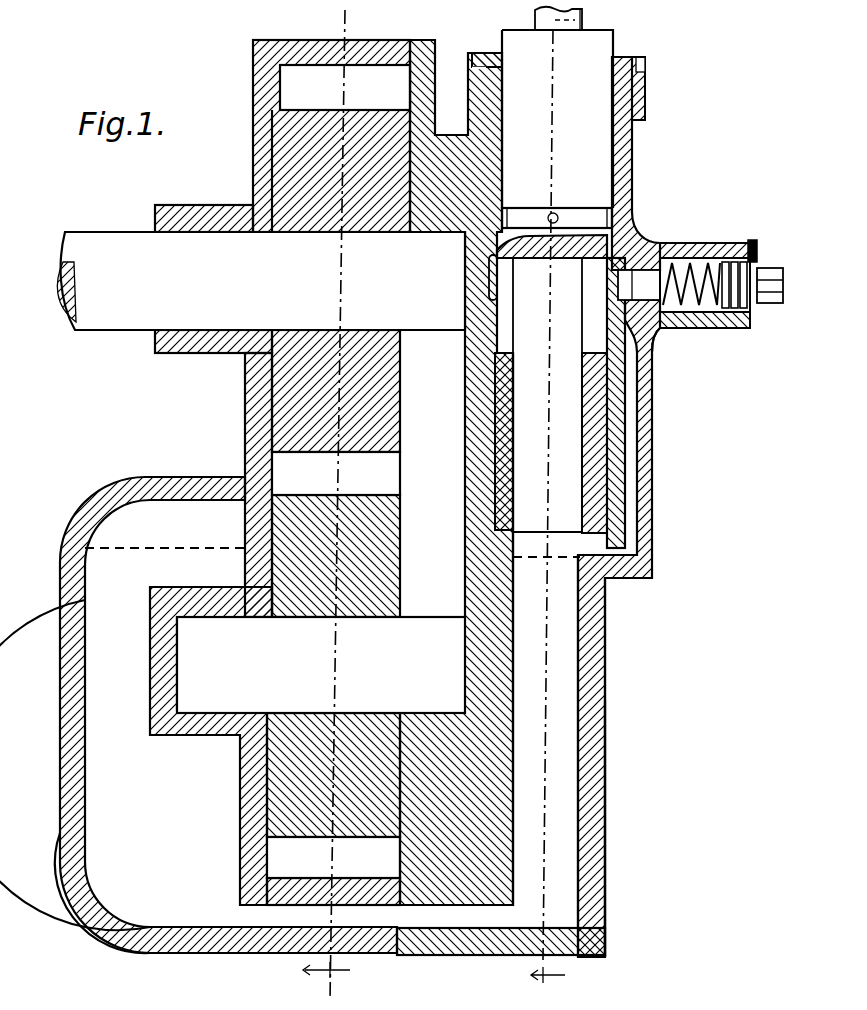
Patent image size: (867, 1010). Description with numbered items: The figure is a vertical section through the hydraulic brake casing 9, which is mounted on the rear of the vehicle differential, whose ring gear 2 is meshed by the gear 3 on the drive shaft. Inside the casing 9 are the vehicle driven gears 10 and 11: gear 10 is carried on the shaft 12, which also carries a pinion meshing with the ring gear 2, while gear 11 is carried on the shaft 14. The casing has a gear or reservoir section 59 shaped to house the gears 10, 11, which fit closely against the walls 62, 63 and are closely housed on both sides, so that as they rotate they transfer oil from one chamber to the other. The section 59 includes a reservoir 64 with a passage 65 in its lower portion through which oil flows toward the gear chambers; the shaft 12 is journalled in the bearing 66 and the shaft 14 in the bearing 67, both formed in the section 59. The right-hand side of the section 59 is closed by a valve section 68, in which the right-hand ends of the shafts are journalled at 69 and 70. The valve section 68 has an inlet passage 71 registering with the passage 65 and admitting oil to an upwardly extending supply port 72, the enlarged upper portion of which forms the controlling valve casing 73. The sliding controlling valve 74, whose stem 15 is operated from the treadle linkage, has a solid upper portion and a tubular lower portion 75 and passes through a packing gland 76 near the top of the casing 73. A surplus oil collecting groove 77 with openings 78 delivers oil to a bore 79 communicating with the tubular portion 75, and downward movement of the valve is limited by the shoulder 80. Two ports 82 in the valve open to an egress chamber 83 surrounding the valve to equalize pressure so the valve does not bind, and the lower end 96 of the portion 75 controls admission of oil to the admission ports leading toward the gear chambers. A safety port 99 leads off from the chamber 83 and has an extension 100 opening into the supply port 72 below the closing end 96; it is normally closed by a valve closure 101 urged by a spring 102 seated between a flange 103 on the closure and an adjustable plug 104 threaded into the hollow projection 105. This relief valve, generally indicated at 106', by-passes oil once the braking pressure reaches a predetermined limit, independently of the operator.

The ring gear 2 is at (327, 506).
The drive shaft gear 3 is at (583, 19).
The hydraulic brake casing 9 is at (85, 680).
The vehicle driven gear 10 is at (322, 182).
The vehicle driven gear 11 is at (120, 548).
The shaft 12 is at (130, 312).
The shaft 14 is at (212, 688).
The valve stem 15 is at (585, 17).
The gear or reservoir section 59 is at (248, 424).
The casing wall 62 is at (318, 40).
The casing wall 63 is at (265, 900).
The reservoir 64 is at (145, 840).
The passage 65 is at (303, 922).
The bearing 66 is at (212, 340).
The bearing 67 is at (162, 684).
The valve section 68 is at (608, 606).
The journal 69 is at (436, 472).
The journal 70 is at (440, 612).
The inlet passage 71 is at (450, 920).
The supply port 72 is at (562, 768).
The controlling valve casing 73 is at (632, 184).
The controlling valve 74 is at (586, 156).
The tubular portion 75 is at (595, 470).
The packing gland 76 is at (642, 63).
The surplus oil collecting groove 77 is at (520, 214).
The openings 78 is at (558, 212).
The bore 79 is at (557, 260).
The shoulder 80 is at (547, 560).
The ports 82 is at (550, 306).
The egress chamber 83 is at (492, 277).
The lower end 96 is at (528, 530).
The safety port 99 is at (642, 246).
The extension 100 is at (633, 628).
The valve closure 101 is at (700, 233).
The spring 102 is at (728, 243).
The flange 103 is at (658, 346).
The adjustable plug 104 is at (752, 320).
The hollow projection 105 is at (770, 242).
The relief valve 106' is at (741, 314).